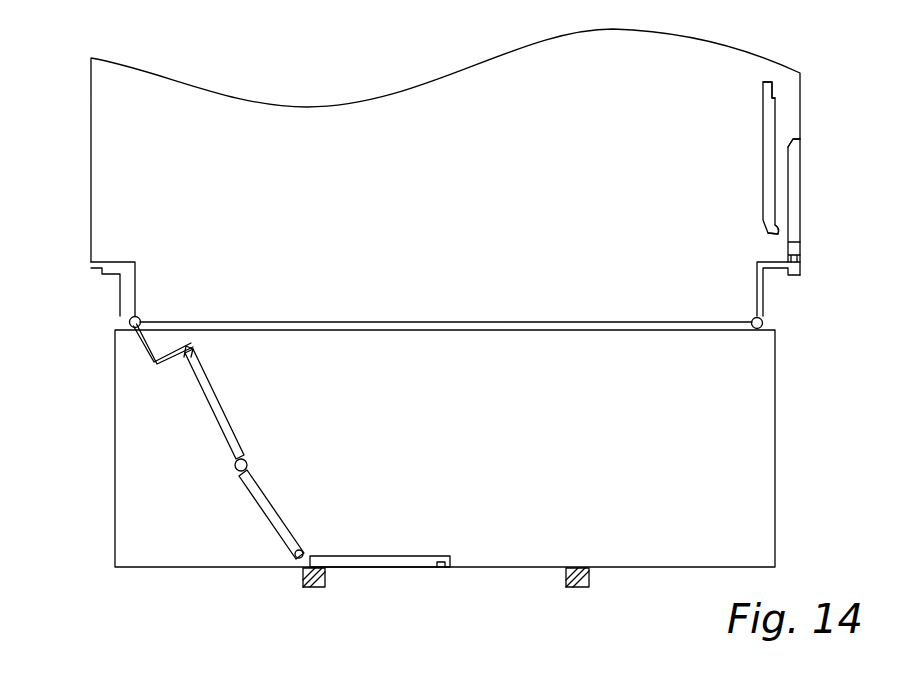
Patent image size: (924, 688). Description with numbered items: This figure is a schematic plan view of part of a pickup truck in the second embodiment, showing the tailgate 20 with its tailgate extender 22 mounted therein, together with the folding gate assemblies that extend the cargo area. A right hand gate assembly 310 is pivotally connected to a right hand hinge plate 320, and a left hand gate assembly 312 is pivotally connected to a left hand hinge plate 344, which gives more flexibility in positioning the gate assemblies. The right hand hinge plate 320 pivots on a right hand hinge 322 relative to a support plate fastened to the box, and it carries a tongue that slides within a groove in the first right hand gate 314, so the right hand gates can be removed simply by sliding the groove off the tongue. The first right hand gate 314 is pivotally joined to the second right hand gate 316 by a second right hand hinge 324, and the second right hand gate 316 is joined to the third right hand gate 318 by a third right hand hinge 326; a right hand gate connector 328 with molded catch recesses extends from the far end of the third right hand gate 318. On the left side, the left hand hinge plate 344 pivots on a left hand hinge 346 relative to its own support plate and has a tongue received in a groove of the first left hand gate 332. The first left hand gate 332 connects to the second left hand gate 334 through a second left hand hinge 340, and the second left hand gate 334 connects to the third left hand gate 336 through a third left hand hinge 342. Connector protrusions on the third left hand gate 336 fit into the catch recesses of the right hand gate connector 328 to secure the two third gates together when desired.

The tailgate 20 is at (446, 482).
The tailgate extender 22 is at (600, 595).
The right hand gate assembly 310 is at (756, 134).
The left hand gate assembly 312 is at (160, 520).
The first right hand gate 314 is at (802, 237).
The second right hand gate 316 is at (822, 152).
The third right hand gate 318 is at (713, 120).
The right hand hinge plate 320 is at (756, 290).
The right hand hinge 322 is at (753, 328).
The second right hand hinge 324 is at (777, 145).
The third right hand hinge 326 is at (770, 233).
The right hand gate connector 328 is at (766, 94).
The first left hand gate 332 is at (207, 408).
The second left hand gate 334 is at (263, 517).
The third left hand gate 336 is at (382, 567).
The second left hand hinge 340 is at (247, 467).
The third left hand hinge 342 is at (301, 552).
The left hand hinge plate 344 is at (147, 348).
The left hand hinge 346 is at (140, 317).